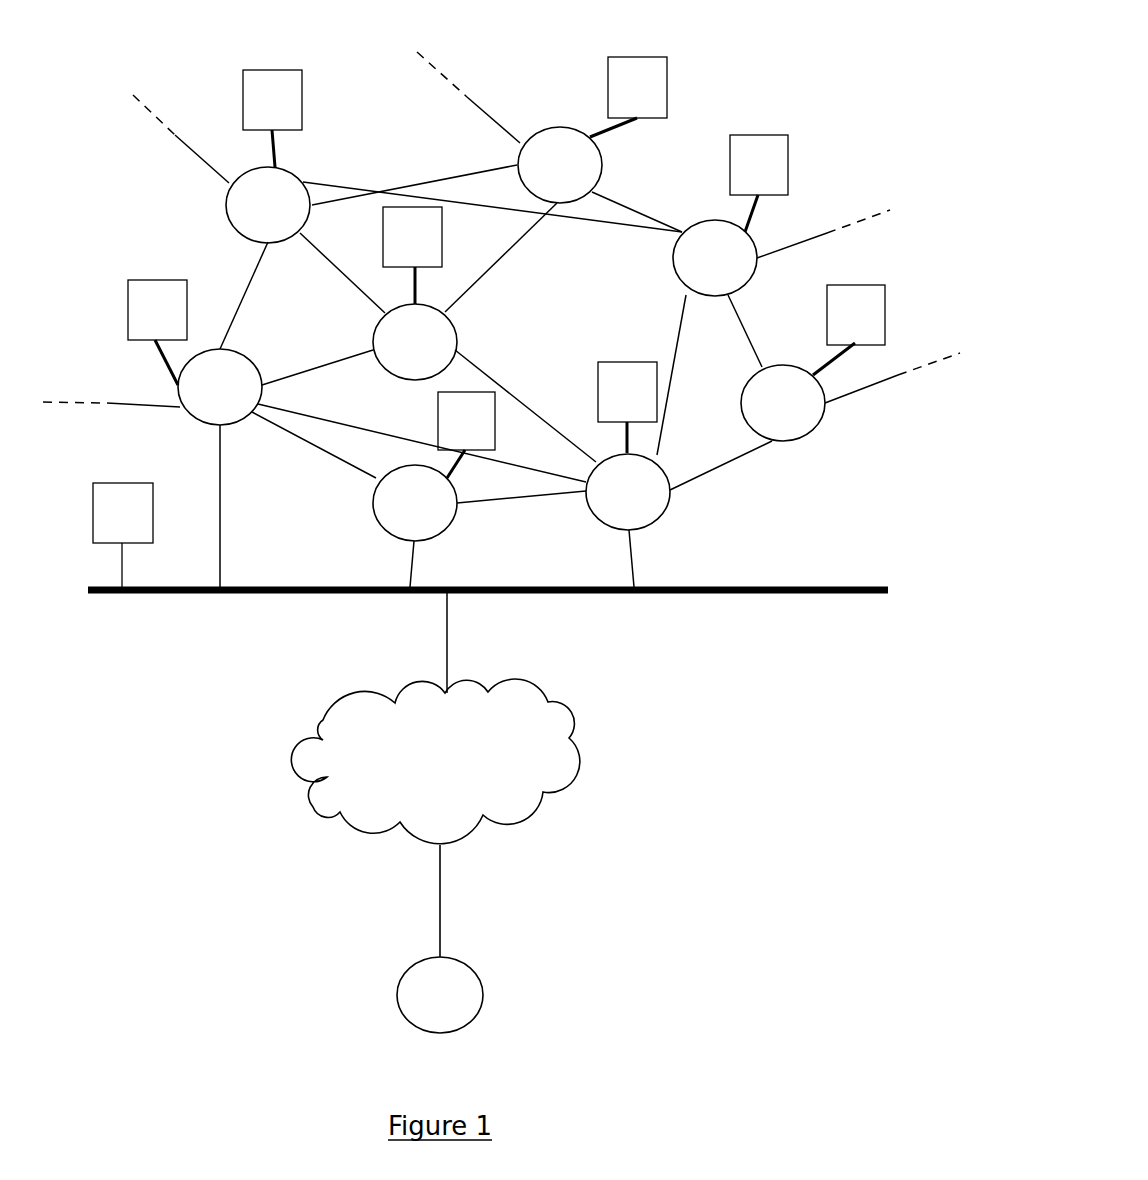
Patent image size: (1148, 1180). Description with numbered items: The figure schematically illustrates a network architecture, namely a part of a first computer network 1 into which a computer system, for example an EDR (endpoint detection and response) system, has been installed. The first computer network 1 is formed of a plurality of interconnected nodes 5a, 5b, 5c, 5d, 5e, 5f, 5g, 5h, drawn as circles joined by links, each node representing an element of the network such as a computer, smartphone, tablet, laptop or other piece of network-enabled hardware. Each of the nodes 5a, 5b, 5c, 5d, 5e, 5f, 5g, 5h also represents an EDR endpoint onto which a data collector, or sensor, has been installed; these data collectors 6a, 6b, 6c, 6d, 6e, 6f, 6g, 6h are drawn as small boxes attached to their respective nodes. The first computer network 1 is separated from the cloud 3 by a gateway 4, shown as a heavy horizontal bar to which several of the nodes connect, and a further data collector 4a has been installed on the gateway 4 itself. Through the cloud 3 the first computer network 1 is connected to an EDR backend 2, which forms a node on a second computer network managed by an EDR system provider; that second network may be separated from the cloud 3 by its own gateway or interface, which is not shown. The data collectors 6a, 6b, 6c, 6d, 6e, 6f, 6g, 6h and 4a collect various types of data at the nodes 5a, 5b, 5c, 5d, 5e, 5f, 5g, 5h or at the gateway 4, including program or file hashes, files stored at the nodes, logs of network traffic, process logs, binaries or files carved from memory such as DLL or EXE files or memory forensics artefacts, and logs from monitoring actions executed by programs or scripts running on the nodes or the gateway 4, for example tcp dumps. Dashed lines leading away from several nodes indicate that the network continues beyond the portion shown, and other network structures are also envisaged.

The first computer network 1 is at (723, 52).
The EDR backend 2 is at (440, 939).
The cloud 3 is at (435, 761).
The gateway 4 is at (817, 587).
The data collector 4a is at (123, 535).
The node 5a is at (268, 205).
The node 5b is at (560, 165).
The node 5c is at (715, 258).
The node 5d is at (783, 403).
The node 5e is at (628, 492).
The node 5f is at (415, 503).
The node 5g is at (220, 387).
The node 5h is at (415, 342).
The data collector 6a is at (272, 118).
The data collector 6b is at (628, 97).
The data collector 6c is at (759, 183).
The data collector 6d is at (849, 330).
The data collector 6e is at (627, 407).
The data collector 6f is at (466, 435).
The data collector 6g is at (157, 332).
The data collector 6h is at (412, 255).